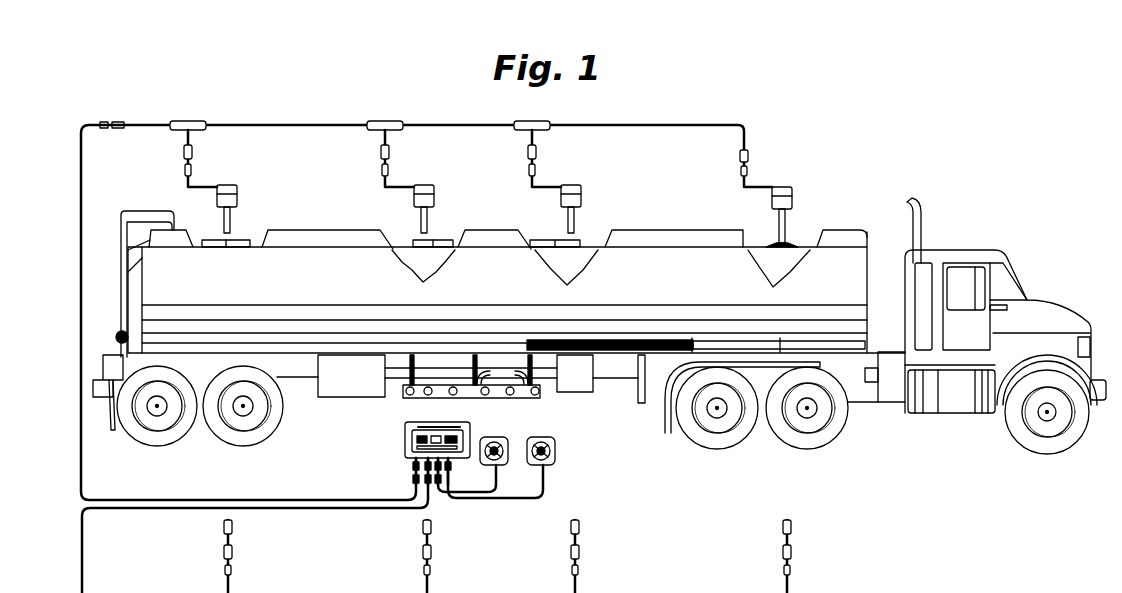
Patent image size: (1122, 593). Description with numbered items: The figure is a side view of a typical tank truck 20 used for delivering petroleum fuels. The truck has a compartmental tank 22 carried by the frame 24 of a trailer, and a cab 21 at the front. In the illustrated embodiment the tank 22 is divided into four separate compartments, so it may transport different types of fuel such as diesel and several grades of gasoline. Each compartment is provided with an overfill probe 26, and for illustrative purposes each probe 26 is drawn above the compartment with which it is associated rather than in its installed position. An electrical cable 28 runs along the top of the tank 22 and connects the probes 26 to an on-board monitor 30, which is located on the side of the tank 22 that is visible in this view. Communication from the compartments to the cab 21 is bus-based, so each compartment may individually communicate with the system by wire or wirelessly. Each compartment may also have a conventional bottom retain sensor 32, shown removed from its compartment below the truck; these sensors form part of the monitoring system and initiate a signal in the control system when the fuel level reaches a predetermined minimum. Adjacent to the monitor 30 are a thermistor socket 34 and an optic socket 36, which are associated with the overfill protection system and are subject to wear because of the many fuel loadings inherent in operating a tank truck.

The tank truck 20 is at (1005, 321).
The cab 21 is at (976, 250).
The compartmental tank 22 is at (662, 219).
The frame 24 is at (875, 404).
The overfill probe 26 is at (237, 200).
The electrical cable 28 is at (282, 124).
The on-board monitor 30 is at (405, 447).
The bottom retain sensor 32 is at (232, 540).
The thermistor socket 34 is at (492, 437).
The optic socket 36 is at (556, 451).